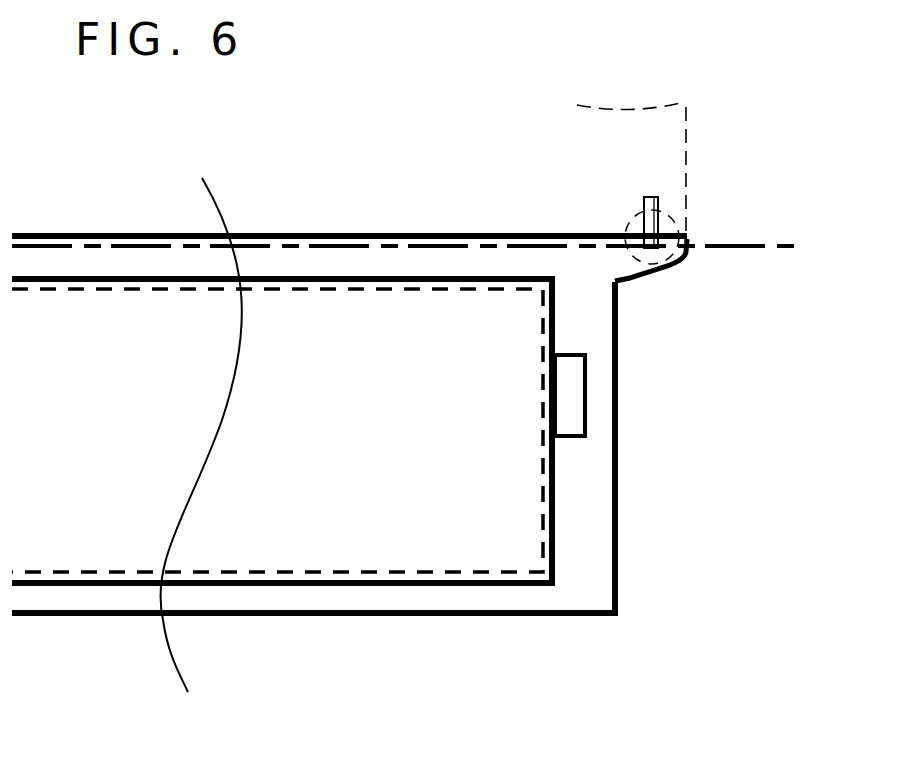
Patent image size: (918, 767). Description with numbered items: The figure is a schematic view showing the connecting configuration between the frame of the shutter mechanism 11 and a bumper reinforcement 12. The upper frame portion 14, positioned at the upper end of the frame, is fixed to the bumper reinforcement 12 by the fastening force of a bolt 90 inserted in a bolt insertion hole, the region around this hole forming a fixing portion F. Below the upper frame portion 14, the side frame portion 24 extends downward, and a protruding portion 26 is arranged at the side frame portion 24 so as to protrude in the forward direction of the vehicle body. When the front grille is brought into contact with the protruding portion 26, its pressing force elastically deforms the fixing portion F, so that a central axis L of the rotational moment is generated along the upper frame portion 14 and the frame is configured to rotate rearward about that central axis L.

The shutter mechanism 11 is at (90, 585).
The bumper reinforcement 12 is at (673, 123).
The upper frame portion 14 is at (322, 260).
The side frame portion 24 is at (582, 500).
The protruding portion 26 is at (568, 402).
The bolt 90 is at (653, 208).
The fixing portion F is at (630, 203).
The central axis L is at (760, 243).